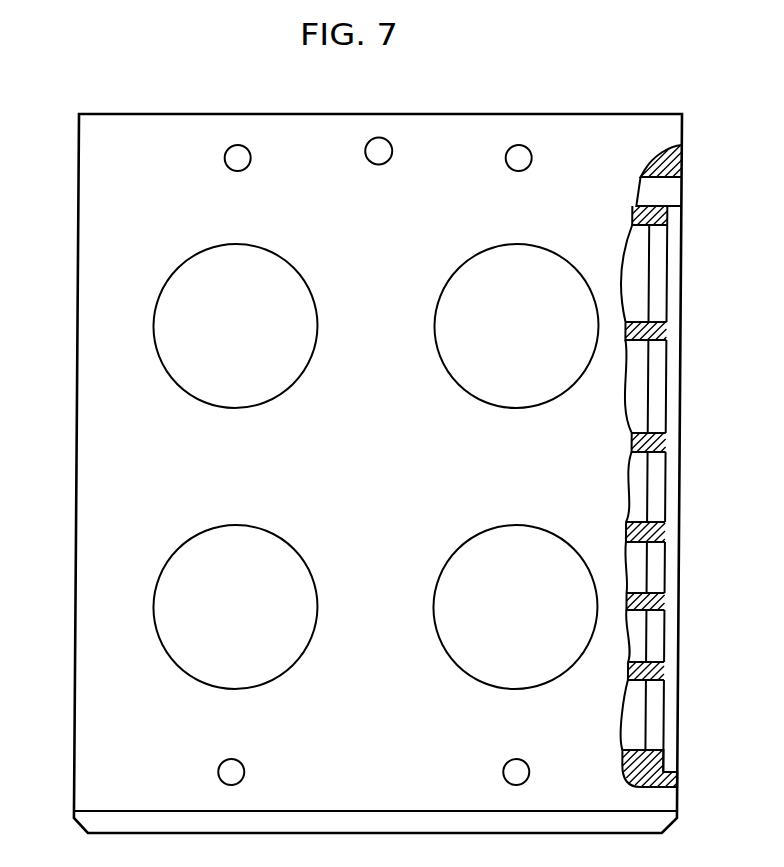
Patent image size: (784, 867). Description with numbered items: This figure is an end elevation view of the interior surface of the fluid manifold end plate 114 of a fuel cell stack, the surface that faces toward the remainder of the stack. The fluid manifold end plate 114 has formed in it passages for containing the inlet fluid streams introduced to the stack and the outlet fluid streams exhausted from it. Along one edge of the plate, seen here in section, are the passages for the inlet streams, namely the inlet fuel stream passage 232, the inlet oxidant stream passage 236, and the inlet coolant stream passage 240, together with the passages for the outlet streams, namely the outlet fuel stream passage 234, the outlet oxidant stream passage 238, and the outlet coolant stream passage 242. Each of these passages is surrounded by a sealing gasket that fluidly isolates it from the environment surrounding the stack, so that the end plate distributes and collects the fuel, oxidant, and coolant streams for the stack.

The fluid manifold end plate 114 is at (330, 136).
The inlet fuel stream passage 232 is at (667, 632).
The outlet fuel stream passage 234 is at (668, 567).
The inlet oxidant stream passage 236 is at (666, 705).
The outlet oxidant stream passage 238 is at (667, 472).
The inlet coolant stream passage 240 is at (666, 362).
The outlet coolant stream passage 242 is at (663, 254).